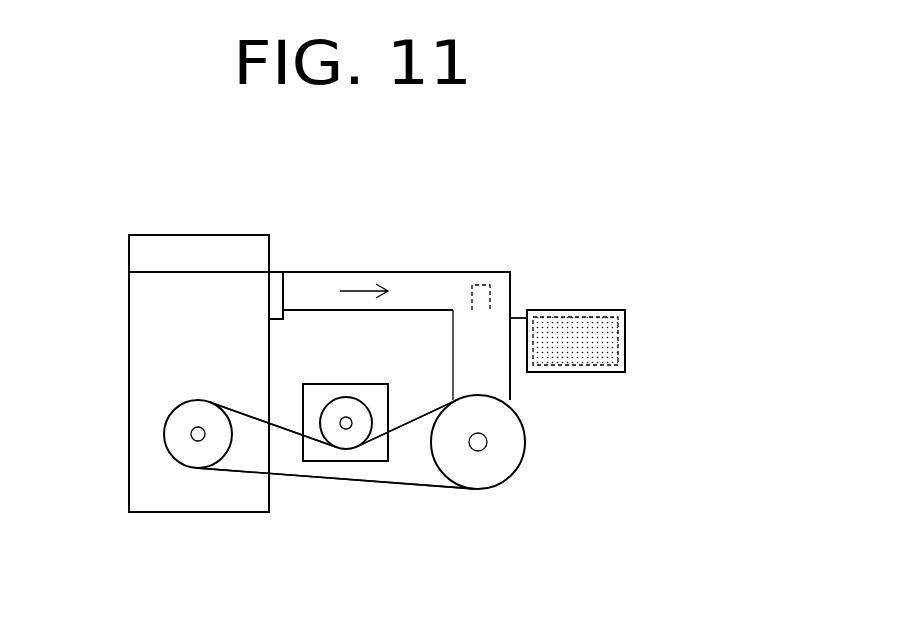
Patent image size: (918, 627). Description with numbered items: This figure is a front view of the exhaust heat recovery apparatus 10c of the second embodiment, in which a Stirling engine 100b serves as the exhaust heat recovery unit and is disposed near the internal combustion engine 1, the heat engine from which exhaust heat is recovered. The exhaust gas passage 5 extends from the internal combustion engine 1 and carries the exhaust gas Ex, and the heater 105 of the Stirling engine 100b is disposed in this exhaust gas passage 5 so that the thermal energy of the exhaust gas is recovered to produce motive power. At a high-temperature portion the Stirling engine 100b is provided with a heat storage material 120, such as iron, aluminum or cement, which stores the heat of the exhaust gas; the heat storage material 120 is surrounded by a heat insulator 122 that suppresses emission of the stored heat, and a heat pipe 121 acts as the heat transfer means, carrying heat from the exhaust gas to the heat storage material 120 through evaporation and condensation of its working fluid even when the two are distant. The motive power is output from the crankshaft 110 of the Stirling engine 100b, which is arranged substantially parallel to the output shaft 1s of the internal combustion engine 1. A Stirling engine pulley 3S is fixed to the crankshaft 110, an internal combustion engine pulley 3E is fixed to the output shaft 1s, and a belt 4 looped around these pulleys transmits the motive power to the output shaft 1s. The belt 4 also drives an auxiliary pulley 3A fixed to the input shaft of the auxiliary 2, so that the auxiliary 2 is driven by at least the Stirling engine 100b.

The internal combustion engine 1 is at (150, 318).
The output shaft 1s is at (198, 434).
The auxiliary 2 is at (312, 405).
The auxiliary pulley 3A is at (352, 404).
The internal combustion engine pulley 3E is at (197, 455).
The Stirling engine pulley 3S is at (497, 465).
The belt 4 is at (370, 483).
The exhaust gas passage 5 is at (393, 285).
The exhaust heat recovery apparatus 10c is at (412, 494).
The Stirling engine 100b is at (497, 392).
The heater 105 is at (478, 285).
The crankshaft 110 is at (478, 442).
The heat storage material 120 is at (618, 350).
The heat pipe 121 is at (517, 318).
The heat insulator 122 is at (625, 318).